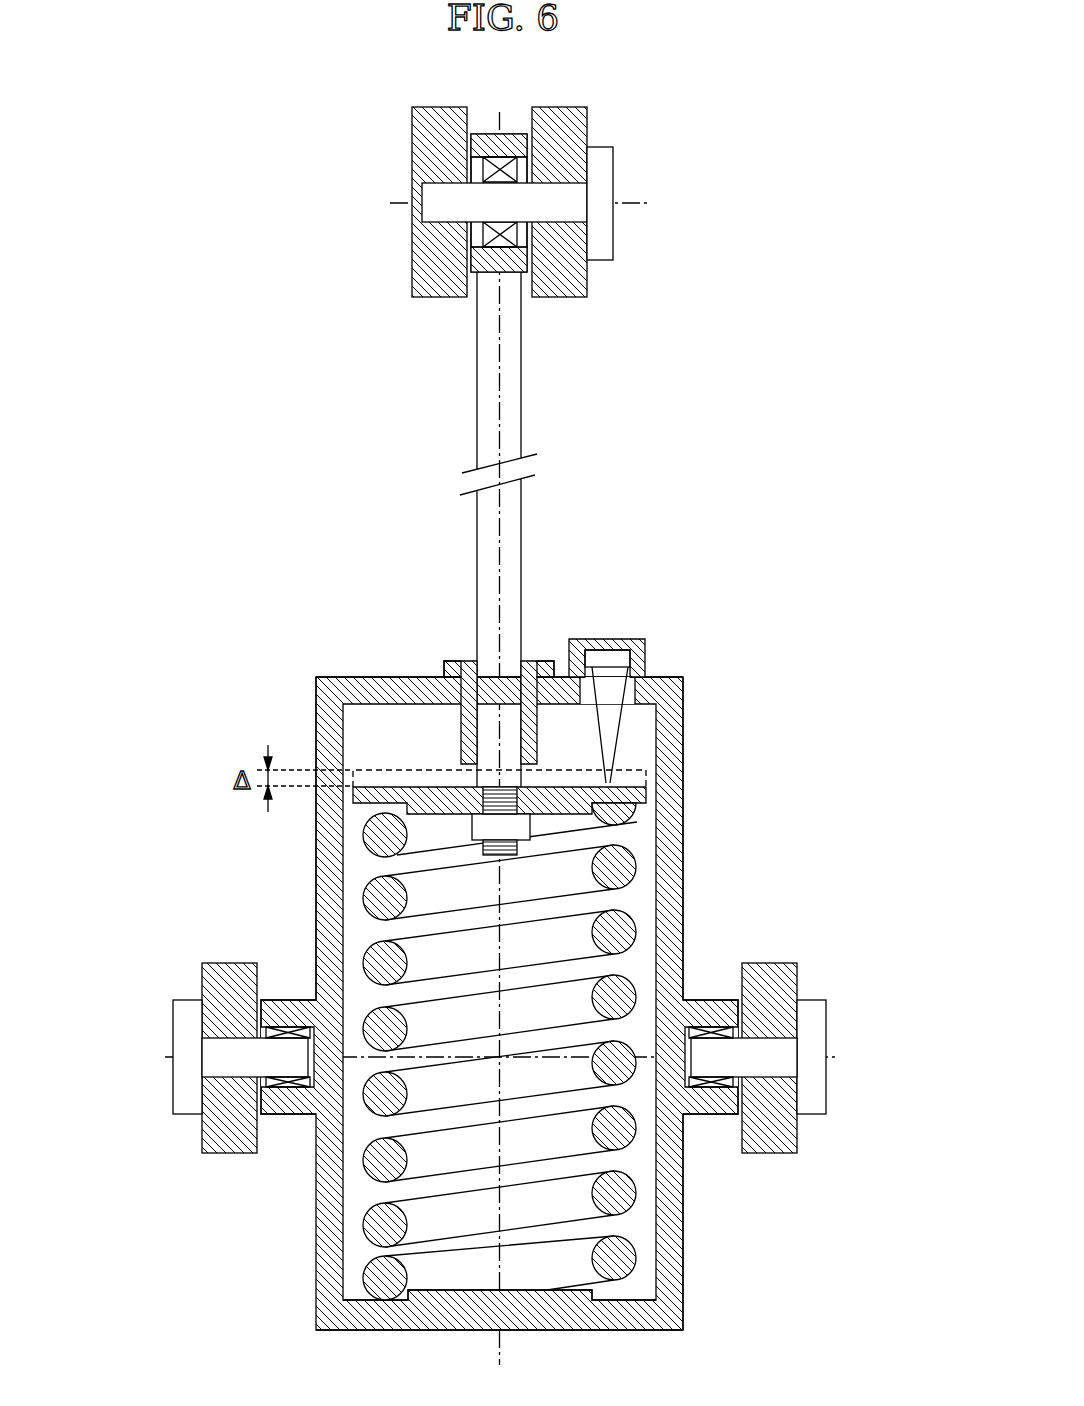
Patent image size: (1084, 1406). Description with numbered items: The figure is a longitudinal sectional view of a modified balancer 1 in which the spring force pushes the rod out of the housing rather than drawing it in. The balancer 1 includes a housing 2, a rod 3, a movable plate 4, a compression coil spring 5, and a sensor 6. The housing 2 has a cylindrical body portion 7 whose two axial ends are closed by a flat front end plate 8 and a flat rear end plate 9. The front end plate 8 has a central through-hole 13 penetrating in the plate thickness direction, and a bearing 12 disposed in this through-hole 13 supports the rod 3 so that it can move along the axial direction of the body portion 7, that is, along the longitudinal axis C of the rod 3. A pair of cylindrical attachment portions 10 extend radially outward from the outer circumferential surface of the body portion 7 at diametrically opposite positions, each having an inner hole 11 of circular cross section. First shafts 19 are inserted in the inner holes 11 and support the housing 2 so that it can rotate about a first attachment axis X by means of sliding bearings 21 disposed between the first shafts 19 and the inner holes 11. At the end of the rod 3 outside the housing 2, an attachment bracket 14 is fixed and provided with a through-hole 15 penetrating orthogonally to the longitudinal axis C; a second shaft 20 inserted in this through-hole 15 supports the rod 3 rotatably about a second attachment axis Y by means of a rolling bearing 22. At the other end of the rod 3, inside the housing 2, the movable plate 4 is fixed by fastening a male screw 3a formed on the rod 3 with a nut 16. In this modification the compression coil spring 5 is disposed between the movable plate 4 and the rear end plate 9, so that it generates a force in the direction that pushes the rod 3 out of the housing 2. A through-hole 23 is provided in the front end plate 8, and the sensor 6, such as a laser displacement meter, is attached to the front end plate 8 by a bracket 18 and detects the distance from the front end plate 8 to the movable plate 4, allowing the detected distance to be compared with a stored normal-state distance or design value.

The balancer 1 is at (852, 148).
The housing 2 is at (690, 785).
The rod 3 is at (523, 398).
The male screw 3a is at (517, 848).
The movable plate 4 is at (431, 816).
The compression coil spring 5 is at (636, 867).
The sensor 6 is at (644, 670).
The body portion 7 is at (684, 827).
The front end plate 8 is at (337, 677).
The rear end plate 9 is at (611, 1332).
The attachment portion 10 is at (278, 1000).
The inner hole 11 is at (293, 1088).
The bearing 12 is at (461, 735).
The through-hole 13 is at (476, 683).
The attachment bracket 14 is at (489, 132).
The through-hole 15 is at (519, 163).
The nut 16 is at (472, 830).
The bracket 18 is at (607, 639).
The first shaft 19 is at (166, 1021).
The second shaft 20 is at (617, 163).
The sliding bearing 21 is at (257, 1078).
The rolling bearing 22 is at (483, 168).
The through-hole 23 is at (625, 707).
The longitudinal axis C is at (497, 340).
The first attachment axis X is at (833, 1055).
The second attachment axis Y is at (633, 199).